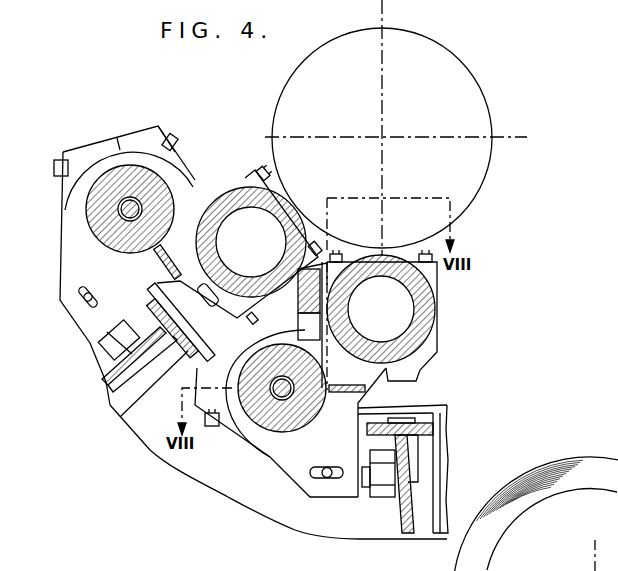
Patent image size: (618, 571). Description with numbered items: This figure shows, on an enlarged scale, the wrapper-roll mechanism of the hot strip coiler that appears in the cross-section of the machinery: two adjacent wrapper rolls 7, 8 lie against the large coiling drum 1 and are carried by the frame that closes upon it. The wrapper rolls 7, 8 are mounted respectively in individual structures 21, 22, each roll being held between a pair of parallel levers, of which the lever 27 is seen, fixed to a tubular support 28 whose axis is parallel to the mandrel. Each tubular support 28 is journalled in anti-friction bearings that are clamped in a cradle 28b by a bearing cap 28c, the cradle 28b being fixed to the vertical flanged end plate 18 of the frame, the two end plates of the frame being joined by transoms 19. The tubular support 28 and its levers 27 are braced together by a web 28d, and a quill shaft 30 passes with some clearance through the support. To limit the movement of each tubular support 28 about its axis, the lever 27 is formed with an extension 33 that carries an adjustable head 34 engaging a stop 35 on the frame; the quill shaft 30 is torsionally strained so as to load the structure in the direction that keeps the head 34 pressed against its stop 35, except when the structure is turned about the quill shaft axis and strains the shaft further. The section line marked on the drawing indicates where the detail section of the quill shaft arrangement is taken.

The drum 1 is at (435, 53).
The wrapper roll 7 is at (199, 240).
The wrapper roll 8 is at (413, 333).
The end plate 18 is at (442, 491).
The transom 19 is at (404, 507).
The structure 21 is at (191, 157).
The structure 22 is at (382, 391).
The lever 27 is at (190, 200).
The tubular support 28 is at (125, 250).
The cradle 28b is at (104, 143).
The bearing cap 28c is at (141, 142).
The web 28d is at (159, 253).
The quill shaft 30 is at (118, 218).
The extension 33 is at (302, 477).
The adjustable head 34 is at (375, 495).
The stop 35 is at (412, 457).